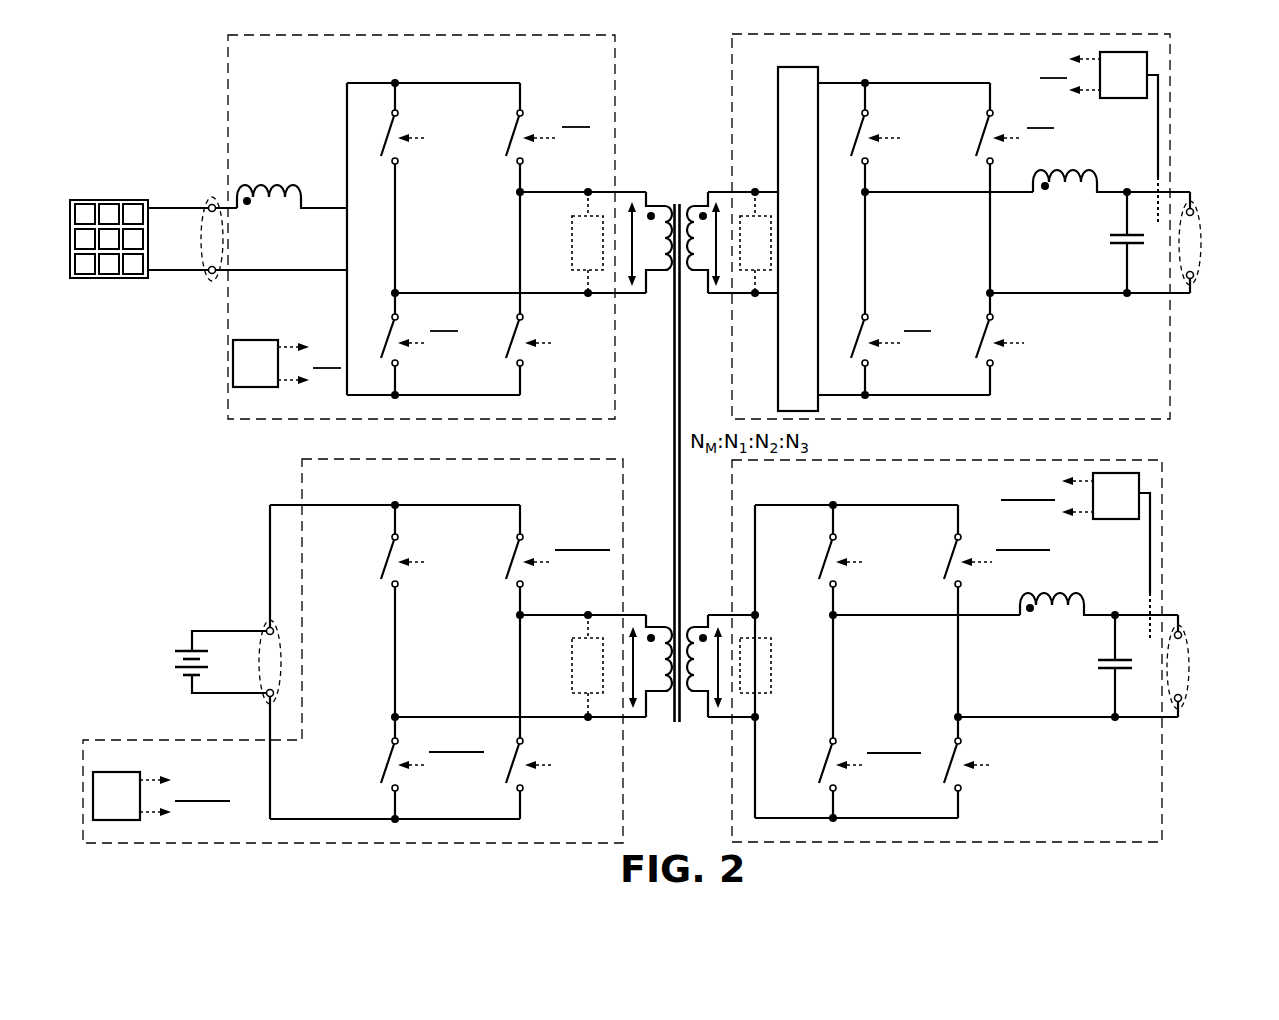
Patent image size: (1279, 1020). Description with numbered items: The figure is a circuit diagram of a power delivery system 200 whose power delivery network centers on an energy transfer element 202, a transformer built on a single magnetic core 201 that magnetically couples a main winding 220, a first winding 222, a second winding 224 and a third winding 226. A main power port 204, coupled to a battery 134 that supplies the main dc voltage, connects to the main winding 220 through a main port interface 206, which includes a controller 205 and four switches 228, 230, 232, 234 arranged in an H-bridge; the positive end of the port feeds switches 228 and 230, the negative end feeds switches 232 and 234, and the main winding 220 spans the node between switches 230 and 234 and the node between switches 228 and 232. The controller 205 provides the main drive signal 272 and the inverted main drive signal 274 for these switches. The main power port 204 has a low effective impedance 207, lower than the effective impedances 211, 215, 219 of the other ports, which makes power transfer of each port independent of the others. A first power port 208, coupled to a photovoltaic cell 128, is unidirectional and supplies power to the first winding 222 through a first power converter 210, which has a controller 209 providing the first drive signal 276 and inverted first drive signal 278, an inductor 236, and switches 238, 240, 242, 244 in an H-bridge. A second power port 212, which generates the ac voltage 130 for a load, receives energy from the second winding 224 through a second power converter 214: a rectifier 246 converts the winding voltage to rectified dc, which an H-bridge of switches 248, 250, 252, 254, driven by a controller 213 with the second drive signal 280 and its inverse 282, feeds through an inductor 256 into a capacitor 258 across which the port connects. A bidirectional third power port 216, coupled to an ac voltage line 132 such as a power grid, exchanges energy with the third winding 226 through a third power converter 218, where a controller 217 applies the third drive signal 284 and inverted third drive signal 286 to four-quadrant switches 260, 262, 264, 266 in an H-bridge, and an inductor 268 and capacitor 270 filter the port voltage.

The power delivery system 200 is at (118, 421).
The single magnetic core 201 is at (668, 462).
The energy transfer element T1 202 is at (664, 192).
The main power port 204 is at (262, 620).
The controller 205 is at (120, 770).
The main port interface 206 is at (298, 488).
The impedance ZM 207 is at (570, 670).
The first power port 208 is at (208, 200).
The controller 209 is at (268, 338).
The first power converter 210 is at (226, 78).
The impedance Z1 211 is at (570, 246).
The second power port 212 is at (1198, 202).
The controller 213 is at (1150, 56).
The second power converter 214 is at (1176, 112).
The impedance Z2 215 is at (770, 210).
The third power port 216 is at (1186, 626).
The controller 217 is at (1116, 470).
The third power converter 218 is at (1168, 478).
The impedance Z3 219 is at (780, 670).
The main winding 220 is at (656, 706).
The first winding 222 is at (661, 284).
The second winding 224 is at (706, 198).
The third winding 226 is at (698, 622).
The switch S1 228 is at (372, 527).
The switch S2 230 is at (498, 526).
The switch S3 232 is at (365, 726).
The switch S4 234 is at (498, 730).
The inductor 236 is at (262, 172).
The switch S5 238 is at (372, 100).
The switch S6 240 is at (498, 100).
The switch S7 242 is at (384, 306).
The switch S8 244 is at (508, 306).
The rectifier 246 is at (773, 82).
The switch S9 248 is at (850, 100).
The switch S10 250 is at (975, 102).
The switch S11 252 is at (850, 303).
The switch S12 254 is at (968, 302).
The inductor 256 is at (1068, 186).
The capacitor 258 is at (1118, 250).
The switch S13 260 is at (805, 530).
The switch S14 262 is at (940, 520).
The switch S15 264 is at (794, 758).
The switch S16 266 is at (941, 718).
The inductor 268 is at (1056, 606).
The capacitor 270 is at (1108, 672).
The main drive signal UMAIN 272 is at (456, 582).
The inverted main drive signal 274 is at (581, 540).
The first drive signal UA 276 is at (446, 154).
The inverted first drive signal 278 is at (581, 116).
The second drive signal UB 280 is at (916, 128).
The second inverted drive signal 282 is at (1056, 142).
The third drive signal UXOR 284 is at (894, 572).
The inverted third drive signal 286 is at (1054, 566).
The photovoltaic cell 128 is at (125, 197).
The ac voltage VAC1 130 is at (1246, 264).
The ac voltage line 132 is at (1220, 683).
The battery 134 is at (178, 632).